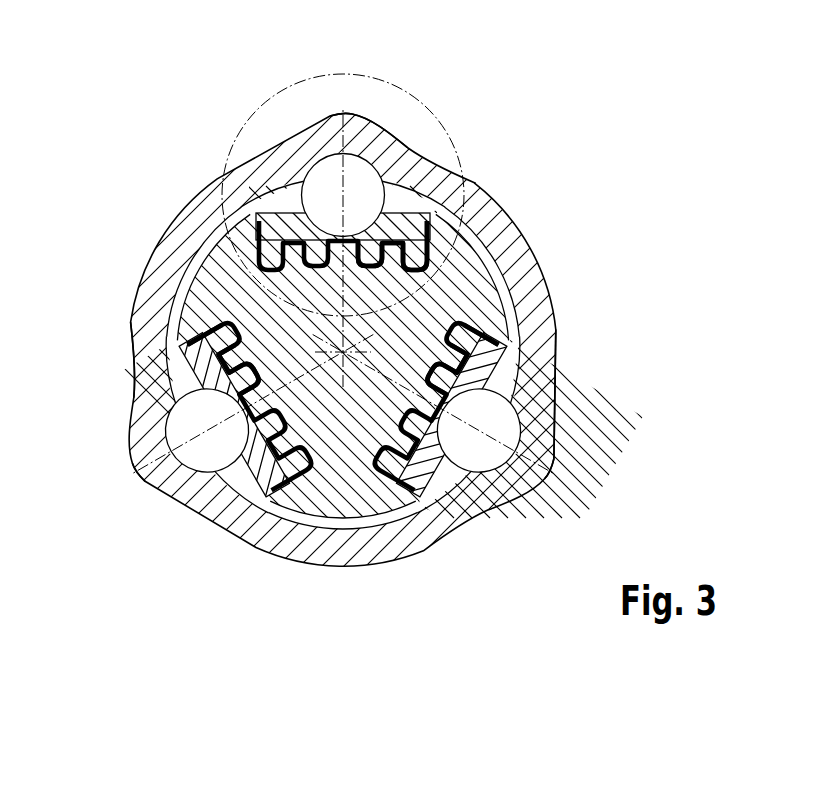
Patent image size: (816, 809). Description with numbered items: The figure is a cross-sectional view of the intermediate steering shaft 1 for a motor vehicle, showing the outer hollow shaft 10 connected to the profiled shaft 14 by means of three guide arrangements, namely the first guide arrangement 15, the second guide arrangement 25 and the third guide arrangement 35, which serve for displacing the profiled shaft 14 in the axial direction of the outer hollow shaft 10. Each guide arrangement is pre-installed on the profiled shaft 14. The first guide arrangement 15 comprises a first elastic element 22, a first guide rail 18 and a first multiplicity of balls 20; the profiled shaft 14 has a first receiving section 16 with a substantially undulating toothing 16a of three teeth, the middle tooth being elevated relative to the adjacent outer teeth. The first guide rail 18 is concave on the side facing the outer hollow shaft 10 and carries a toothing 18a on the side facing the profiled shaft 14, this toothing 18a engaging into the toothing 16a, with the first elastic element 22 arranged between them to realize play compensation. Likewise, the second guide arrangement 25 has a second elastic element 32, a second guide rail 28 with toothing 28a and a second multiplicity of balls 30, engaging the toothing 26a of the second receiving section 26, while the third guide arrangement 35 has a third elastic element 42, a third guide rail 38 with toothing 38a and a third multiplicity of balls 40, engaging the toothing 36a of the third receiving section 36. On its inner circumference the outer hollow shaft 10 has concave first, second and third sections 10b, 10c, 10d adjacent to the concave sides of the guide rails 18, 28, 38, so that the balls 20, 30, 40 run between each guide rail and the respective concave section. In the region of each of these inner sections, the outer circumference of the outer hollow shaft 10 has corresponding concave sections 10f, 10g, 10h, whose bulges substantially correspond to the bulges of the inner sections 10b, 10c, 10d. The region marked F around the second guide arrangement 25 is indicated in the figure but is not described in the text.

The intermediate steering shaft 1 is at (624, 161).
The outer hollow shaft 10 is at (523, 255).
The first section of substantially concave form on the inner circumference 10b is at (557, 440).
The second section of substantially concave form on the inner circumference 10c is at (373, 120).
The third section of substantially concave form on the inner circumference 10d is at (130, 440).
The first section of substantially concave form on the outer circumference 10f is at (555, 470).
The second section of substantially concave form on the outer circumference 10g is at (352, 118).
The third section of substantially concave form on the outer circumference 10h is at (140, 479).
The profiled shaft 14 is at (490, 300).
The first guide arrangement 15 is at (523, 474).
The first receiving section 16 is at (382, 497).
The toothing 16a is at (483, 326).
The first guide rail 18 is at (483, 380).
The toothing 18a is at (497, 372).
The first multiplicity of balls 20 is at (500, 457).
The first elastic element 22 is at (415, 500).
The second guide arrangement 25 is at (328, 138).
The second receiving section 26 is at (256, 245).
The toothing 26a is at (433, 220).
The second guide rail 28 is at (437, 162).
The toothing 28a is at (372, 130).
The second multiplicity of balls 30 is at (323, 173).
The second elastic element 32 is at (258, 216).
The third guide arrangement 35 is at (160, 474).
The third receiving section 36 is at (312, 500).
The toothing 36a is at (232, 323).
The third guide rail 38 is at (168, 396).
The toothing 38a is at (200, 367).
The third multiplicity of balls 40 is at (186, 457).
The third elastic element 42 is at (283, 505).
The detail region F is at (462, 147).